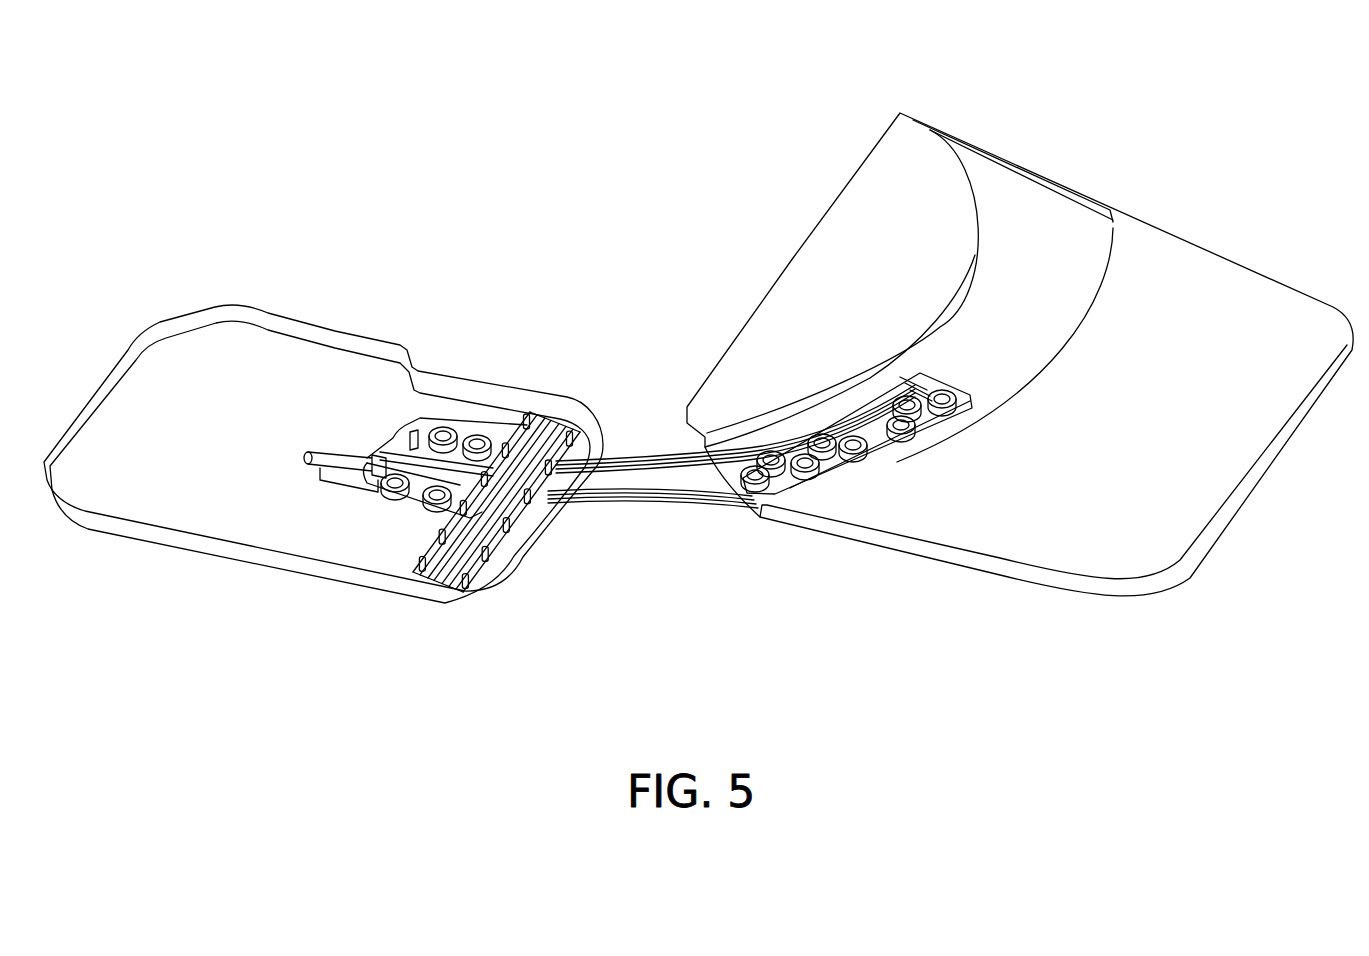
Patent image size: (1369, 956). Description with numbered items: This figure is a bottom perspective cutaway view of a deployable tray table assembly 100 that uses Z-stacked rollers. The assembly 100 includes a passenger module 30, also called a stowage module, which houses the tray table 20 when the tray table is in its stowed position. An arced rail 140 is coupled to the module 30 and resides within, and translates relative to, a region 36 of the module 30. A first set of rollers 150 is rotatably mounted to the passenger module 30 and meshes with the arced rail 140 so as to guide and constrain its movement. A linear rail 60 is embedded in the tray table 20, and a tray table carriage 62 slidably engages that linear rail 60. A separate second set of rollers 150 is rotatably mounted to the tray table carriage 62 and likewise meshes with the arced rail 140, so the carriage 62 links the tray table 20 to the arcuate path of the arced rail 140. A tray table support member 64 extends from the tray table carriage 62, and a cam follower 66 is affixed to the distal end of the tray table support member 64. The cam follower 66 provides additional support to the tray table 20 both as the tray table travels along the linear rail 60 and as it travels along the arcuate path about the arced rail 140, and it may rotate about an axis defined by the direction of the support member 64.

The tray table assembly 100 is at (258, 162).
The tray table 20 is at (203, 507).
The passenger module 30 is at (1193, 476).
The cavity of the module 36 is at (1037, 233).
The linear rail 60 is at (462, 545).
The tray table carriage 62 is at (443, 473).
The tray table support member 64 is at (327, 483).
The cam follower 66 is at (310, 450).
The arced rail 140 is at (680, 487).
The rollers 150 is at (402, 502).